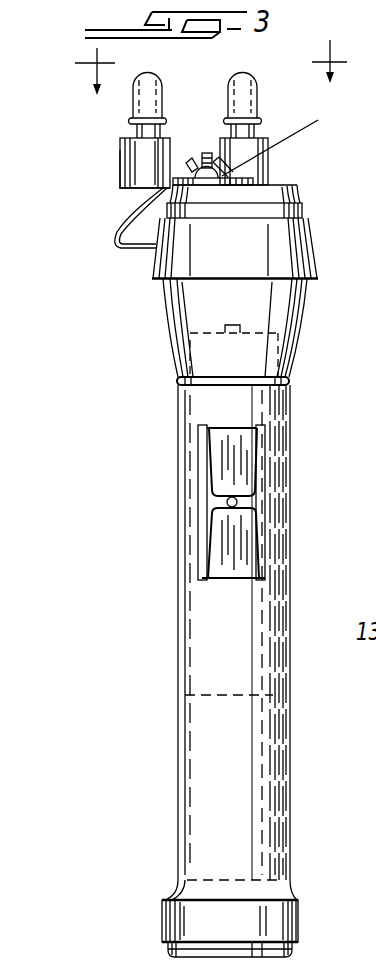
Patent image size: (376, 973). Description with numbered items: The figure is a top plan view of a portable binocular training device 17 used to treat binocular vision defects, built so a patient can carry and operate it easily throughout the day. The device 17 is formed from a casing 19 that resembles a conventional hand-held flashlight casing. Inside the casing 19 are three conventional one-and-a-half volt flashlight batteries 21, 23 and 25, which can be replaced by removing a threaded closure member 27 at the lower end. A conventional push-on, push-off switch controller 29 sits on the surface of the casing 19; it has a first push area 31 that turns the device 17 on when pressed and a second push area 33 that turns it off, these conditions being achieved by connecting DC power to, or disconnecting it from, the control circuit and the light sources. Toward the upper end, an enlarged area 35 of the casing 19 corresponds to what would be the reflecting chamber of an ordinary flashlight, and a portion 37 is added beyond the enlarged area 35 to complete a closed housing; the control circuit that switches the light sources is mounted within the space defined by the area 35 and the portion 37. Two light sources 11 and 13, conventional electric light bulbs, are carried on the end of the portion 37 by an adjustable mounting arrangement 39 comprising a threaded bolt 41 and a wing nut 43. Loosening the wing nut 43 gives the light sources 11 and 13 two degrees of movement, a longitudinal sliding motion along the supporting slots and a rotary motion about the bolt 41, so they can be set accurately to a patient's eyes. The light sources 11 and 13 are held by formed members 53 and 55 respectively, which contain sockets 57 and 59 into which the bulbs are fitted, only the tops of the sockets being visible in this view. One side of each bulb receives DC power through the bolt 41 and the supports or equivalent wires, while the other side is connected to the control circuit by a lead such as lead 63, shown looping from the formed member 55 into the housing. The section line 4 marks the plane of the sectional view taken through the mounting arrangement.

The section line 4- 4 is at (203, 67).
The light source 11 is at (258, 110).
The light source 13 is at (132, 110).
The binocular training device 17 is at (296, 463).
The casing 19 is at (172, 653).
The flashlight battery 21 is at (198, 410).
The flashlight battery 23 is at (202, 624).
The flashlight battery 25 is at (205, 840).
The threaded closure member 27 is at (162, 930).
The switch controller 29 is at (270, 510).
The first push area 31 is at (232, 550).
The second push area 33 is at (225, 462).
The enlarged area 35 is at (317, 252).
The portion 37 is at (301, 201).
The adjustable mounting arrangement 39 is at (240, 170).
The threaded bolt 41 is at (203, 153).
The wing nut 43 is at (225, 172).
The formed member 53 is at (268, 180).
The formed member 55 is at (120, 174).
The socket 57 is at (283, 136).
The socket 59 is at (121, 142).
The lead 63 is at (116, 240).